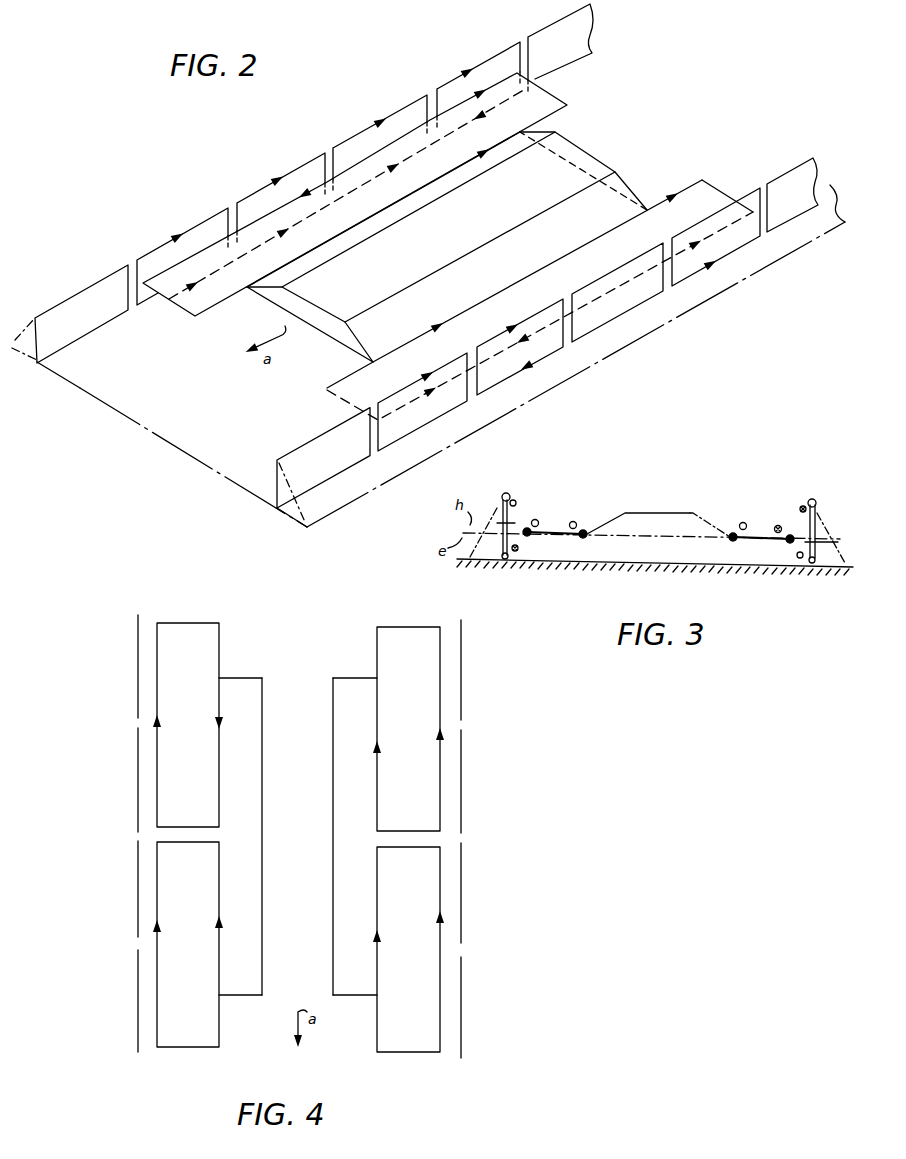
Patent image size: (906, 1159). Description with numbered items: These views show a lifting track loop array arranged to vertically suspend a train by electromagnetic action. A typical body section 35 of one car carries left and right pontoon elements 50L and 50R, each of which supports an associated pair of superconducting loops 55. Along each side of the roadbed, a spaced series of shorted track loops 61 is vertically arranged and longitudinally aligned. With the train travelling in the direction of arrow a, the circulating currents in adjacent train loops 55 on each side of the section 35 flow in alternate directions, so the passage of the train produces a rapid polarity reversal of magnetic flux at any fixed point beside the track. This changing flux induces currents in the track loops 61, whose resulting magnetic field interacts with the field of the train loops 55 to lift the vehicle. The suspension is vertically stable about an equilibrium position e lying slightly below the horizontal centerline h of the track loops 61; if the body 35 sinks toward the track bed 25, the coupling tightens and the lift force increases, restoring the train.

In FIG. 3, the track bed 25 is at (678, 594).
In FIG. 2, the body section of train car 35 is at (470, 237).
In FIG. 3, the body section of train car 35 is at (648, 518).
In FIG. 4, the body section of train car 35 is at (300, 818).
In FIG. 2, the right pontoon element 50R is at (518, 149).
In FIG. 4, the right pontoon element 50R is at (245, 685).
In FIG. 2, the left pontoon element 50L is at (359, 336).
In FIG. 4, the left pontoon element 50L is at (347, 688).
In FIG. 2, the superconducting loops 55 is at (175, 306).
In FIG. 3, the superconducting loops 55 is at (560, 540).
In FIG. 4, the superconducting loops 55 is at (202, 625).
In FIG. 2, the shorted track loops 61 is at (231, 206).
In FIG. 3, the shorted track loops 61 is at (512, 512).
In FIG. 4, the shorted track loops 61 is at (137, 787).